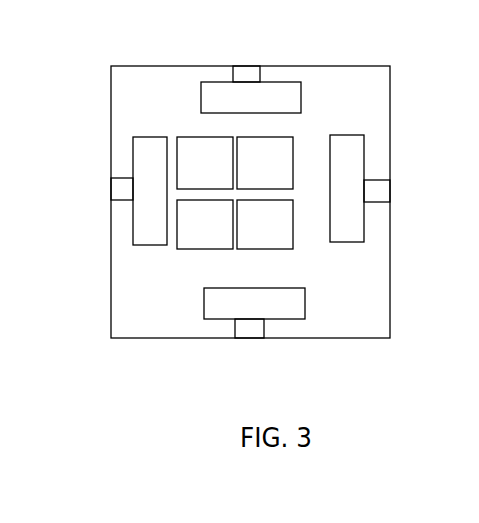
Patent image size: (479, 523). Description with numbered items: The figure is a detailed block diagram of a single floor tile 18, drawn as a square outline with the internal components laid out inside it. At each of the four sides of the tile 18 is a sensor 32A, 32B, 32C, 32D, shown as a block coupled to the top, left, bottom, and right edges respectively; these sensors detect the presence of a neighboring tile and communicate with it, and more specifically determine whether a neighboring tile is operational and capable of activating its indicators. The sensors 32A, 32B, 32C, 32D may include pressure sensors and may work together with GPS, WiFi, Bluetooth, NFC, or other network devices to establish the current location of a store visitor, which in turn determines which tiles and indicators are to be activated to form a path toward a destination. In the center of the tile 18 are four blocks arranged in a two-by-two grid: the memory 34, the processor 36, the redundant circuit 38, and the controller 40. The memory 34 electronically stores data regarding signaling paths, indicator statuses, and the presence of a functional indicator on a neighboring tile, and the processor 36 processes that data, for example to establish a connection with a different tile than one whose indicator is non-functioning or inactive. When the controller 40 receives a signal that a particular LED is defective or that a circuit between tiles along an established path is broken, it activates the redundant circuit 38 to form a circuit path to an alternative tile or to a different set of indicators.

The floor tile 18 is at (111, 100).
The sensor 32A is at (223, 82).
The sensor 32B is at (126, 182).
The sensor 32C is at (233, 322).
The sensor 32D is at (364, 155).
The memory 34 is at (220, 178).
The processor 36 is at (279, 178).
The redundant circuit 38 is at (221, 240).
The controller 40 is at (280, 240).